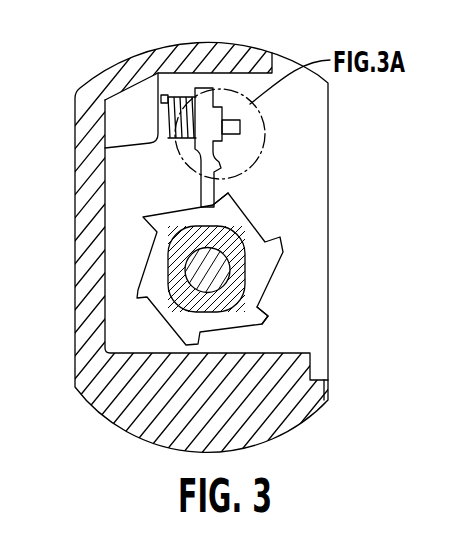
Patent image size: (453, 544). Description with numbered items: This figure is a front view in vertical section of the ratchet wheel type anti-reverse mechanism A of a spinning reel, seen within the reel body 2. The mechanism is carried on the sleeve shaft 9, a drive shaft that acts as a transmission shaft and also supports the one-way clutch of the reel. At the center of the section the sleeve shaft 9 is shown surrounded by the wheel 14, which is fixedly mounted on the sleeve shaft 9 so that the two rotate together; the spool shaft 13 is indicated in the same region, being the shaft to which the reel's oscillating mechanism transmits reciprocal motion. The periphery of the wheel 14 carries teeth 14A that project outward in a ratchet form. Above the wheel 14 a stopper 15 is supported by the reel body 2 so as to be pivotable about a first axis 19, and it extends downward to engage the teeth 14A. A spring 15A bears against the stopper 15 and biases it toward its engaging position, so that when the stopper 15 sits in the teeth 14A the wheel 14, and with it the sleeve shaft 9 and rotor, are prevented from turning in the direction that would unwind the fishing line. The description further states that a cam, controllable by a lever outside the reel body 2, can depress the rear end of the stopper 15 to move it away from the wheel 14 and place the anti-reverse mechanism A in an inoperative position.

The reel body 2 is at (300, 407).
The sleeve shaft 9 is at (190, 300).
The spool shaft 13 is at (190, 270).
The wheel 14 is at (260, 275).
The teeth 14A is at (226, 196).
The stopper 15 is at (200, 187).
The spring 15A is at (175, 95).
The first axis 19 is at (242, 122).
The anti-reverse mechanism A is at (243, 178).